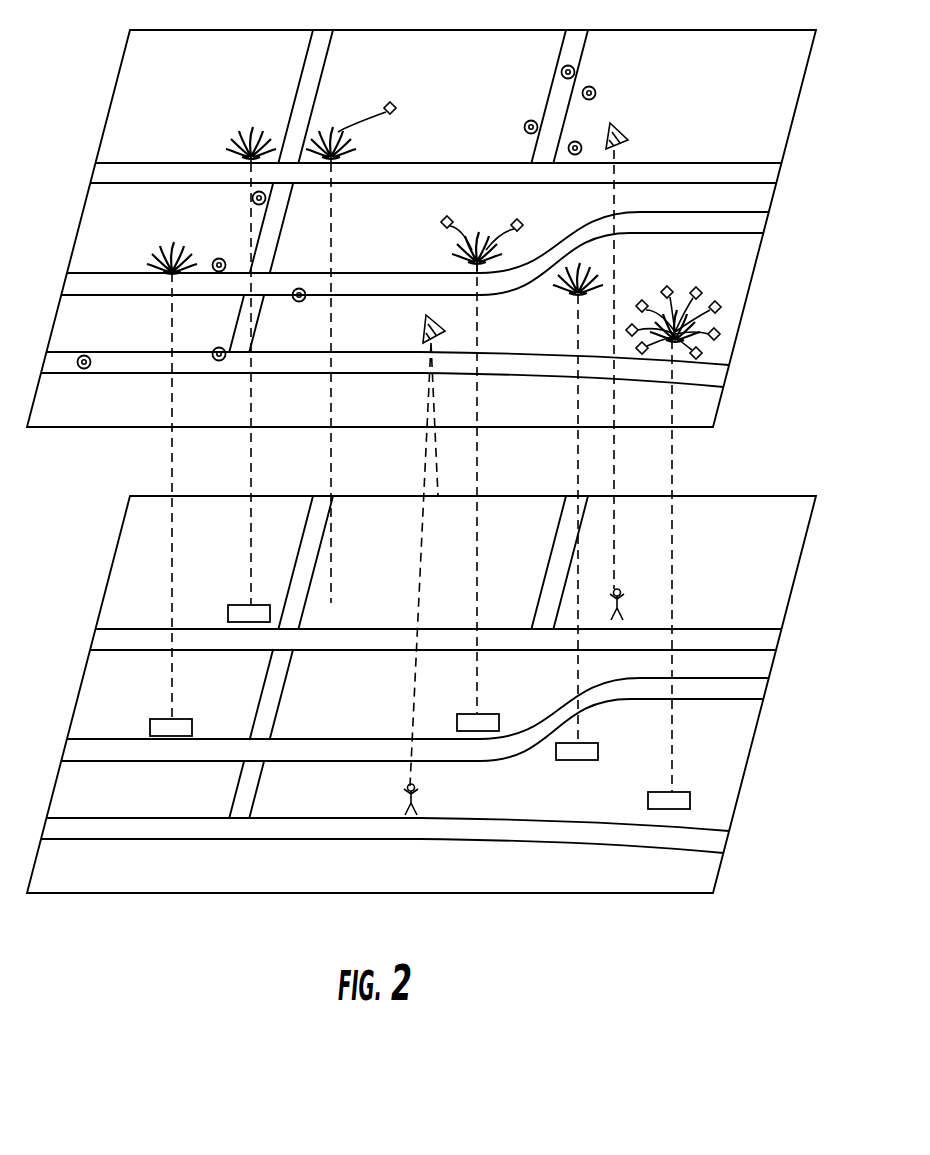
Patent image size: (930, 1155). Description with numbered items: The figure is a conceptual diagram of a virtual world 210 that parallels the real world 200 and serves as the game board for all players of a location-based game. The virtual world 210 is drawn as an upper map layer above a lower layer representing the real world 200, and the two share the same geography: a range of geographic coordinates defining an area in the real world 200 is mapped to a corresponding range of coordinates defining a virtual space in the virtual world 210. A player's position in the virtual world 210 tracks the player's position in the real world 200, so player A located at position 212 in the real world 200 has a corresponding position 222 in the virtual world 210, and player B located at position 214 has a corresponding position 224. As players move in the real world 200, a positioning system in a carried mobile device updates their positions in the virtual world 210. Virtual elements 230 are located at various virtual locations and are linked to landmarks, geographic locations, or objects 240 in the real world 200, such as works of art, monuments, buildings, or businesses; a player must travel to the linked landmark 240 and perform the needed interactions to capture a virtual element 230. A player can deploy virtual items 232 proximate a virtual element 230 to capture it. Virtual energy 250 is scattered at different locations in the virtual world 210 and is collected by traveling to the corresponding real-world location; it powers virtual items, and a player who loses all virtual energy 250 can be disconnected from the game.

The real world 200 is at (788, 603).
The virtual world 210 is at (790, 140).
The position of player A in the real world 212 is at (407, 788).
The position of player B in the real world 214 is at (621, 590).
The position of player A in the virtual world 222 is at (446, 331).
The position of player B in the virtual world 224 is at (630, 140).
The virtual element 230 is at (249, 127).
The virtual item 232 is at (395, 105).
The real world landmark or object 240 is at (238, 605).
The virtual energy 250 is at (596, 91).